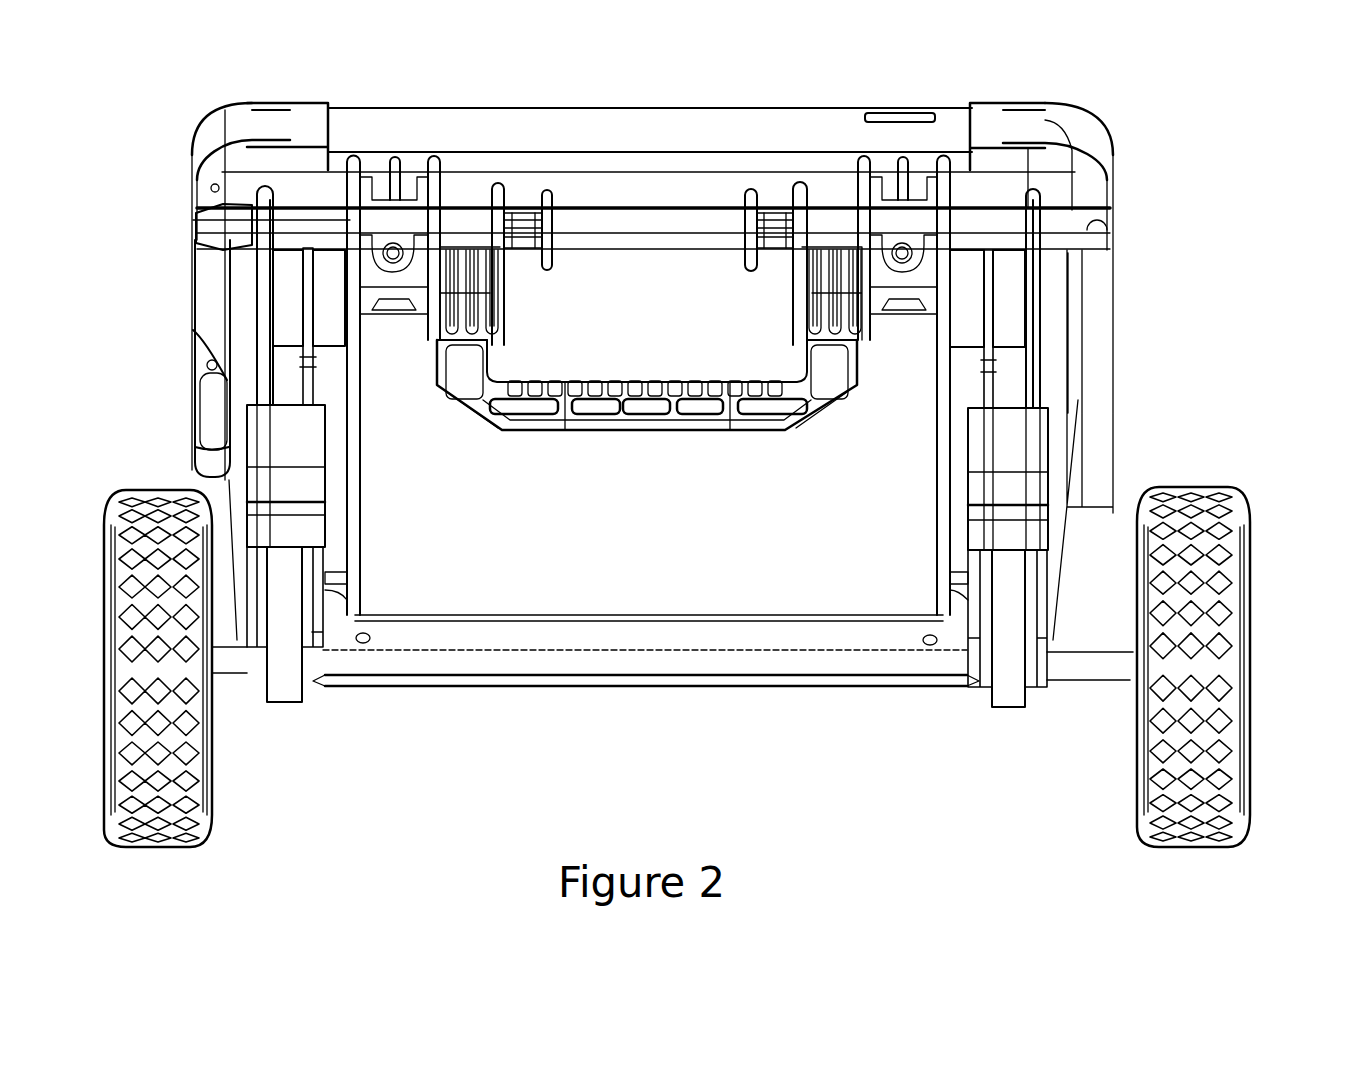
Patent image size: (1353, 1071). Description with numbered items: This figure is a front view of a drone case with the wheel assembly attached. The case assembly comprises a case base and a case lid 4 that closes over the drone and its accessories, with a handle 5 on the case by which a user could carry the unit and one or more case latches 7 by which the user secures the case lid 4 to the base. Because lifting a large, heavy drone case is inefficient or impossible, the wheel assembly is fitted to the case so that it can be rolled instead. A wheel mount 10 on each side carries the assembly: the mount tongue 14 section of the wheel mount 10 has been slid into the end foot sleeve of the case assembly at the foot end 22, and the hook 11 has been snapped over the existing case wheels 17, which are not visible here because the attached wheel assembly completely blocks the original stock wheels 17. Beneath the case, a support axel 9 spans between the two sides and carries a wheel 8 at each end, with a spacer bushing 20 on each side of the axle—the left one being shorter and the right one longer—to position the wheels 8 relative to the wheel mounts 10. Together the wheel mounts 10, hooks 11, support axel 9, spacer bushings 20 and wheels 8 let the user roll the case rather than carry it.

The case lid 4 is at (633, 123).
The handle 5 is at (690, 420).
The case latch 7 is at (908, 240).
The wheel 8 is at (1225, 840).
The support axel 9 is at (510, 665).
The wheel mount 10 is at (1010, 652).
The hook 11 is at (287, 687).
The mount tongue 14 is at (290, 373).
The stock wheel/case wheels 17 is at (333, 630).
The spacer bushing 20 is at (233, 660).
The foot end 22 is at (300, 275).